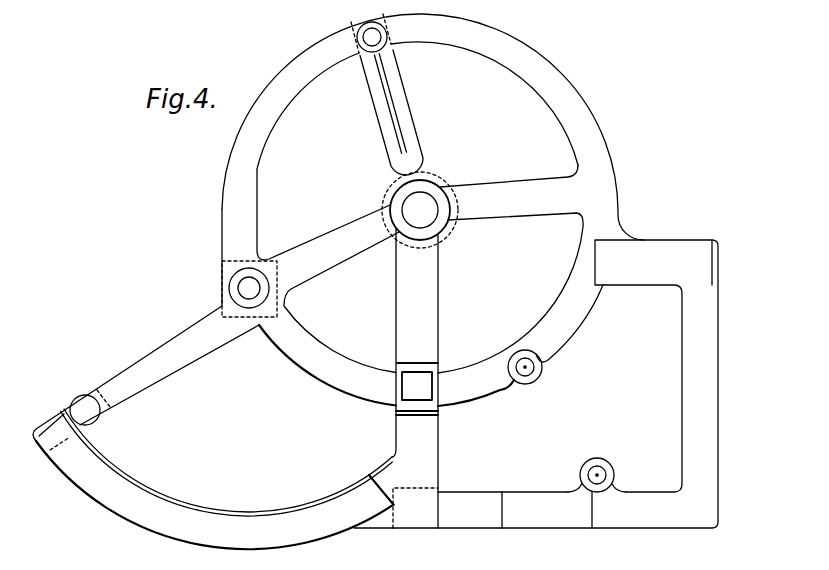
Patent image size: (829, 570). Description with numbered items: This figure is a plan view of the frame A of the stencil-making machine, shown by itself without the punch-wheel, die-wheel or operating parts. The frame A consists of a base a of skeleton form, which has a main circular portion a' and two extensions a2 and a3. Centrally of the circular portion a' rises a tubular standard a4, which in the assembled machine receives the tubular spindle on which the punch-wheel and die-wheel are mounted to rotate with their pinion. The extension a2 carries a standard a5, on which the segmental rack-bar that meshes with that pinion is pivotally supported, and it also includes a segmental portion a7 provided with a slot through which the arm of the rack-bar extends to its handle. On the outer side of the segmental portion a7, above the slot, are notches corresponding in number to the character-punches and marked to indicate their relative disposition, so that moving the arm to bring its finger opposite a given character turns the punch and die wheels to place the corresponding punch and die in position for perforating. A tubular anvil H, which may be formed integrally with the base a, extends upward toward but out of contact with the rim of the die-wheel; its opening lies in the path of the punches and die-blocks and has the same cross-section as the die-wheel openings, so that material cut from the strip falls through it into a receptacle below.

The base a is at (433, 233).
The main circular portion a' is at (556, 334).
The frame extension a2 is at (168, 338).
The frame extension a3 is at (682, 382).
The tubular standard a4 is at (437, 198).
The standard a5 is at (230, 288).
The segmental portion a7 is at (267, 513).
The frame A is at (428, 378).
The tubular anvil H is at (438, 369).